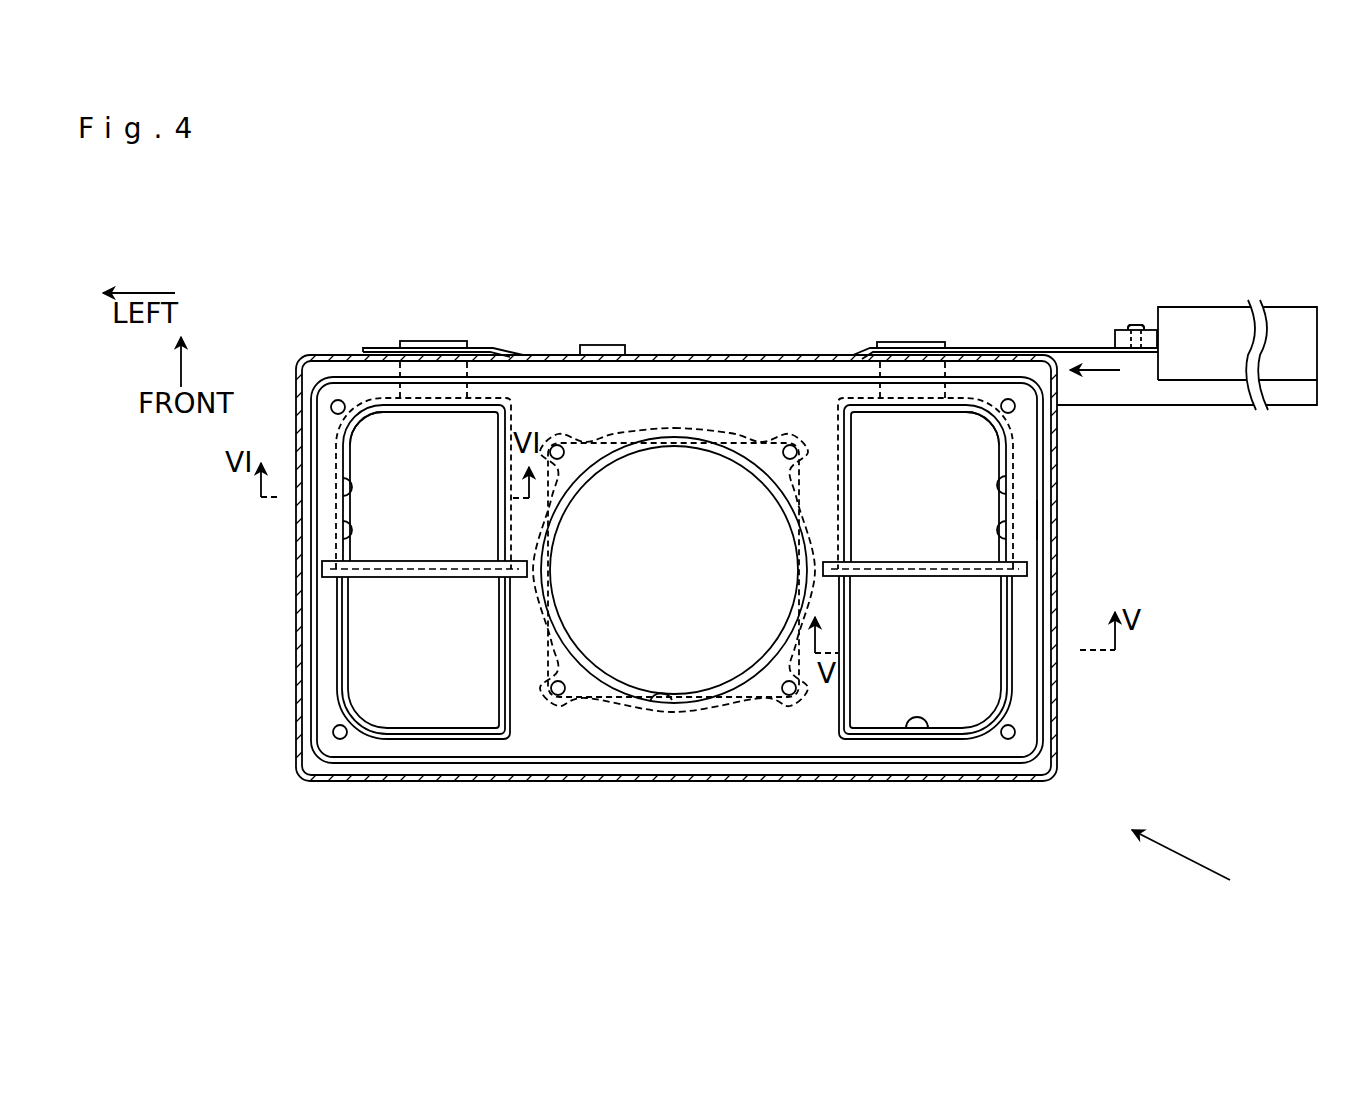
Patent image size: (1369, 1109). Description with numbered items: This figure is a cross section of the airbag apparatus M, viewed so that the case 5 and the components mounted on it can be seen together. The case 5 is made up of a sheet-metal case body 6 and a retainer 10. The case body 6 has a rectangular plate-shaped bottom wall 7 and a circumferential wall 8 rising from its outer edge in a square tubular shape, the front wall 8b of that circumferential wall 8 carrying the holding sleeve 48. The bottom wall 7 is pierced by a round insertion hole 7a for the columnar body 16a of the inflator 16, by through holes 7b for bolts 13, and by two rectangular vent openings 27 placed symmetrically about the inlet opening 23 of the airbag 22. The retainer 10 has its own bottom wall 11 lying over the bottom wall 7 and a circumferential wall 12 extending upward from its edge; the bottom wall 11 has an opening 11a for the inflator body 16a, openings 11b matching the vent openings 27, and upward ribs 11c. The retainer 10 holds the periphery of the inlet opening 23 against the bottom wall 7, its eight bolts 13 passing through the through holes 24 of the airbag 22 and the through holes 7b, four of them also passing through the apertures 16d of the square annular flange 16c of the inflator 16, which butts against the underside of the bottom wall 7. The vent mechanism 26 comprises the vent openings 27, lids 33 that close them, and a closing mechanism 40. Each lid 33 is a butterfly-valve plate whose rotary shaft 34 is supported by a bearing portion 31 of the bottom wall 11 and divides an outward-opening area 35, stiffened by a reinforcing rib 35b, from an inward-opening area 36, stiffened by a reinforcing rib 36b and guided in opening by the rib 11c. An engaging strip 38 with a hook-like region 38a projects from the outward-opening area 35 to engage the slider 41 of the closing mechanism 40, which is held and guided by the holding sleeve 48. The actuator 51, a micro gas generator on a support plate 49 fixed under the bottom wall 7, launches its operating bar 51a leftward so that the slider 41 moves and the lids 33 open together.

The case 5 is at (593, 651).
The case body 6 is at (601, 651).
The bottom wall 7 is at (658, 662).
The insertion hole 7a is at (655, 795).
The through holes 7b is at (673, 573).
The circumferential wall 8 is at (676, 651).
The front wall 8b is at (760, 288).
The retainer 10 is at (658, 662).
The bottom wall 11 is at (658, 662).
The opening 11a is at (655, 795).
The openings 11b is at (343, 532).
The rib 11c is at (320, 604).
The circumferential wall 12 is at (658, 662).
The bolts 13 is at (333, 402).
The inflator 16 is at (674, 647).
The body 16a is at (637, 668).
The flange 16c is at (585, 712).
The apertures 16d is at (784, 466).
The airbag 22 is at (850, 757).
The inlet opening 23 is at (661, 702).
The through holes 24 is at (673, 573).
The vent mechanism 26 is at (1024, 520).
The vent openings 27 is at (343, 487).
The bearing portion 31 is at (684, 563).
The lids 33 is at (705, 658).
The rotary shaft 34 is at (442, 558).
The outward-opening area 35 is at (702, 546).
The reinforcing rib 35b is at (355, 425).
The inward-opening area 36 is at (702, 740).
The reinforcing rib 36b is at (450, 727).
The engaging strip 38 is at (445, 340).
The hook-like region 38a is at (659, 288).
The closing mechanism 40 is at (1206, 319).
The slider 41 is at (1125, 330).
The holding sleeve 48 is at (603, 345).
The support plate 49 is at (1218, 395).
The actuator 51 is at (1290, 325).
The operating bar 51a is at (1150, 333).
The airbag apparatus M is at (1185, 871).